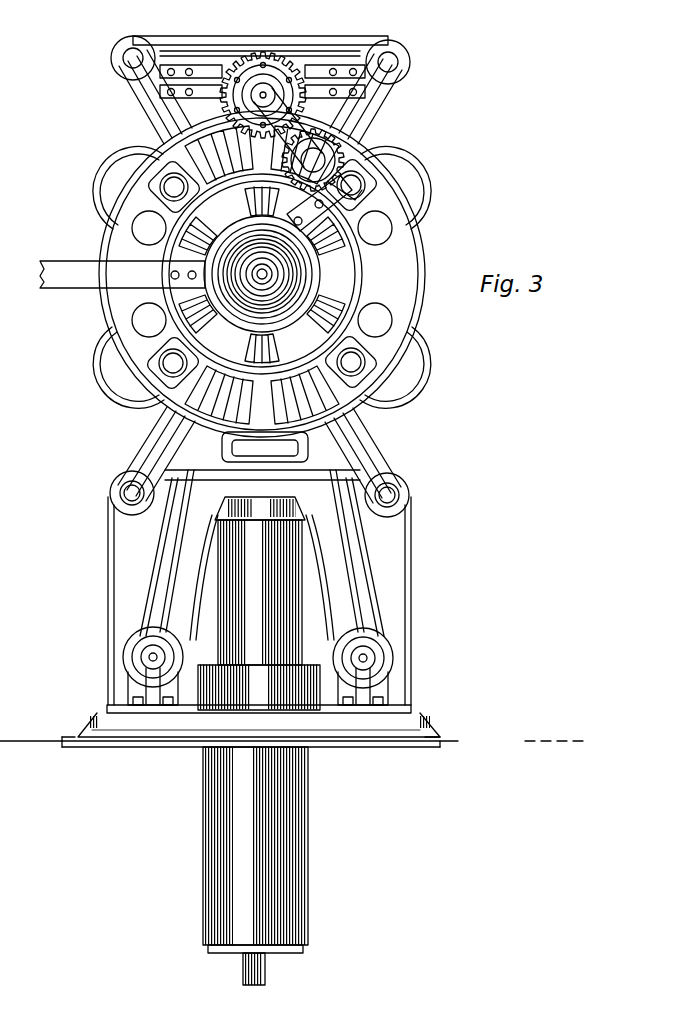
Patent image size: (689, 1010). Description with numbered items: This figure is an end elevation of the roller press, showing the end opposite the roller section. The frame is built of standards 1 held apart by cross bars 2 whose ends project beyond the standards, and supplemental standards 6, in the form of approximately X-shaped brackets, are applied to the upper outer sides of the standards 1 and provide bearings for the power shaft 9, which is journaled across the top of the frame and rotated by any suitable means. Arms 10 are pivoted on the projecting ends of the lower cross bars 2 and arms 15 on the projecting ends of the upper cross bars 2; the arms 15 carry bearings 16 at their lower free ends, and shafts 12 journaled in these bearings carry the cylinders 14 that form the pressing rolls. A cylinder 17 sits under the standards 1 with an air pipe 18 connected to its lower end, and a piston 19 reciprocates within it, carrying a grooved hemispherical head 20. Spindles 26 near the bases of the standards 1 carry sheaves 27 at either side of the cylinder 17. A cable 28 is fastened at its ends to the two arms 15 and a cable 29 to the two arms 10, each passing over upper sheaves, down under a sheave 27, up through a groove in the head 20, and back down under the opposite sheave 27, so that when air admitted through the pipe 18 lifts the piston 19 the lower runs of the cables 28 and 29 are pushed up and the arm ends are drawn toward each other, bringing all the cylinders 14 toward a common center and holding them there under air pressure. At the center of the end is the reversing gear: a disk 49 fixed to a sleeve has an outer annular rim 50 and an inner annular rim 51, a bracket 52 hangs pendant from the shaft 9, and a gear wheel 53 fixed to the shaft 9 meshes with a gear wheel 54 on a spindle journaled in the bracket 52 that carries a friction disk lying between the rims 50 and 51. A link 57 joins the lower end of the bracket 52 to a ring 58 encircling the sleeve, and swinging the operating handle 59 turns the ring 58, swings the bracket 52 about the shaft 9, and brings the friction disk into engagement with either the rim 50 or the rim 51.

The standard 1 is at (392, 569).
The cross bar 2 is at (392, 498).
The supplemental standard 6 is at (313, 449).
The power shaft 9 is at (265, 92).
The arm 10 is at (128, 448).
The shaft 12 is at (352, 361).
The cylinder 14 is at (100, 179).
The arm 15 is at (135, 107).
The bearing 16 is at (163, 198).
The cylinder 17 is at (306, 821).
The air pipe 18 is at (262, 969).
The piston 19 is at (240, 599).
The hemispherical head 20 is at (310, 506).
The spindle 26 is at (150, 658).
The sheave 27 is at (126, 676).
The cable 28 is at (140, 514).
The cable 29 is at (162, 541).
The disk 49 is at (410, 264).
The outer annular rim 50 is at (352, 307).
The inner annular rim 51 is at (405, 312).
The bracket 52 is at (325, 80).
The gear wheel 53 is at (252, 60).
The gear wheel 54 is at (343, 135).
The link 57 is at (320, 209).
The ring 58 is at (248, 313).
The operating handle 59 is at (66, 288).